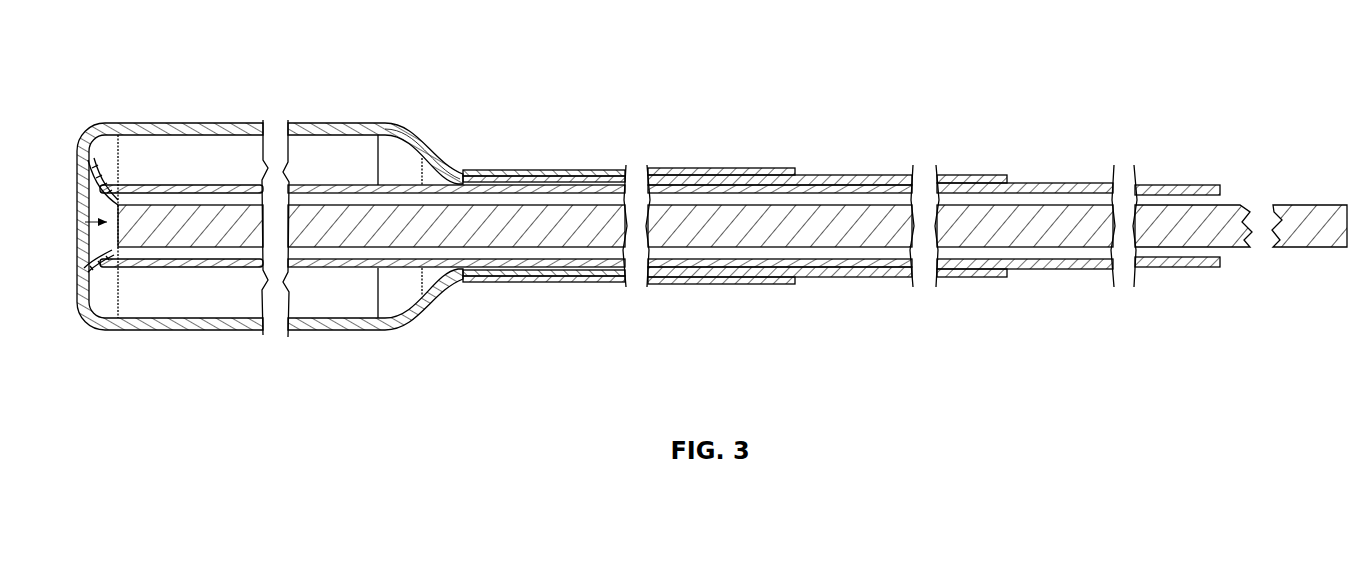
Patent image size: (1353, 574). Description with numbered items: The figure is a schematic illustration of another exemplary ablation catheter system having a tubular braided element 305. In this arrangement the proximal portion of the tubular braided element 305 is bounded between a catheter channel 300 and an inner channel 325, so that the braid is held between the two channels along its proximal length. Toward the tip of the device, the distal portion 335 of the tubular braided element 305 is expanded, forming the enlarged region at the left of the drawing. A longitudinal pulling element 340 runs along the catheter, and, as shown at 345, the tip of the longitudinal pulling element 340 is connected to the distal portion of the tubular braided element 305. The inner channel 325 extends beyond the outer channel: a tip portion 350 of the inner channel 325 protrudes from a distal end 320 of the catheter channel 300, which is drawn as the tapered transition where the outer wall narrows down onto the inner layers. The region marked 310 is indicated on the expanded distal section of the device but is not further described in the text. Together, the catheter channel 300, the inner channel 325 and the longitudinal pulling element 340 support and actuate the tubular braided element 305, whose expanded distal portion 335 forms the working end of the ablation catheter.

The catheter channel 300 is at (520, 172).
The tubular braided element 305 is at (828, 180).
The distal tip region 310 is at (283, 348).
The distal end 320 is at (457, 162).
The inner channel 325 is at (1065, 188).
The distal portion 335 is at (148, 132).
The longitudinal pulling element 340 is at (678, 235).
The connection of pulling element tip 345 is at (112, 246).
The tip portion 350 is at (308, 190).